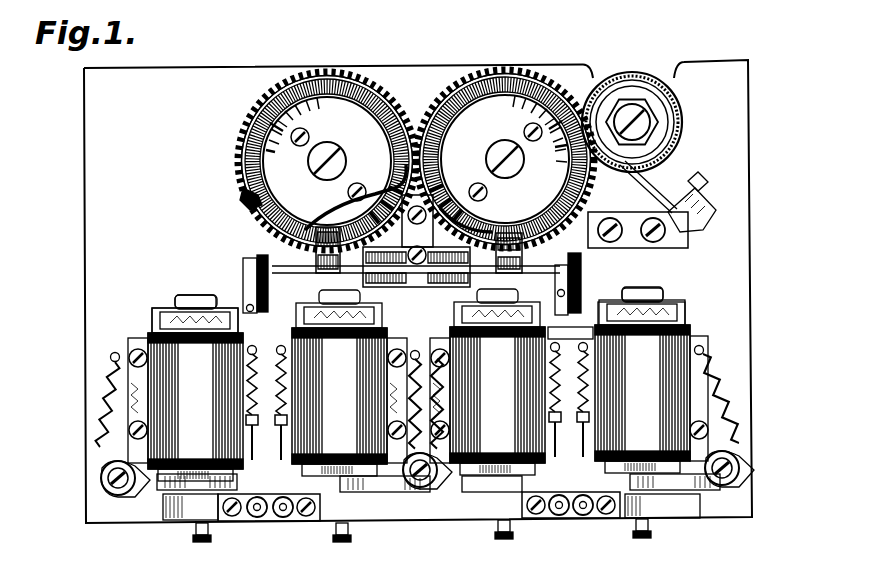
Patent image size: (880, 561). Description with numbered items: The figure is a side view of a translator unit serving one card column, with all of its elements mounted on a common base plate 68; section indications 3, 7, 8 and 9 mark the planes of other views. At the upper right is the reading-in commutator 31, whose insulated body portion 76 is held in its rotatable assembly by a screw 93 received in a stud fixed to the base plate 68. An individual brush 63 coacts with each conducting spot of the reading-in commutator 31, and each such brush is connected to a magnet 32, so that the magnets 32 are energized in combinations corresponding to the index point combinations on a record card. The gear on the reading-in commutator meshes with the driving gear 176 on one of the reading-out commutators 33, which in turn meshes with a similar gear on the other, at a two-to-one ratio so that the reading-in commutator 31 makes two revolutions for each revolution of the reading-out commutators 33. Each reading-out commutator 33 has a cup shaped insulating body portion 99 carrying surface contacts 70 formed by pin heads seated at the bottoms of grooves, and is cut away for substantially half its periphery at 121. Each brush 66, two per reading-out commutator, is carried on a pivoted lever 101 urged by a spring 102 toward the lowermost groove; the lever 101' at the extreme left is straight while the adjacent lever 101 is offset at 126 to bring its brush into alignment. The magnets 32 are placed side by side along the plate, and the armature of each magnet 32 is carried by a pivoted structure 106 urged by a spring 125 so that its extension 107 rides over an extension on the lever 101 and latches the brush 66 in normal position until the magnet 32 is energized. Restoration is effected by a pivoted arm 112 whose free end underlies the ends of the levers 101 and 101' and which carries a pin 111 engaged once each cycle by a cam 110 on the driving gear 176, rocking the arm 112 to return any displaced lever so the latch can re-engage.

The base plate 68 is at (152, 78).
The section line 3 is at (48, 158).
The section line 7 is at (400, 30).
The section line 8 is at (600, 30).
The section line 9 is at (50, 455).
The reading-out commutator 33 is at (346, 118).
The driving gear 176 is at (298, 88).
The cup shaped insulating body portion 99 is at (279, 97).
The surface contacts 70 is at (416, 163).
The cam 110 is at (359, 184).
The pin 111 is at (243, 189).
The cut-away portion 121 is at (440, 128).
The pivoted arm 112 is at (485, 271).
The brush 66 is at (272, 246).
The brush 63 is at (651, 183).
The reading-in commutator 31 is at (670, 103).
The insulated body portion 76 is at (658, 138).
The screw 93 is at (652, 128).
The offset 126 is at (276, 271).
The pivoted lever 101 is at (421, 310).
The straight lever 101' is at (430, 295).
The magnet 32 is at (418, 384).
The spring 102 is at (254, 383).
The spring 125 is at (108, 393).
The pivoted structure 106 is at (168, 490).
The extension 107 is at (280, 476).